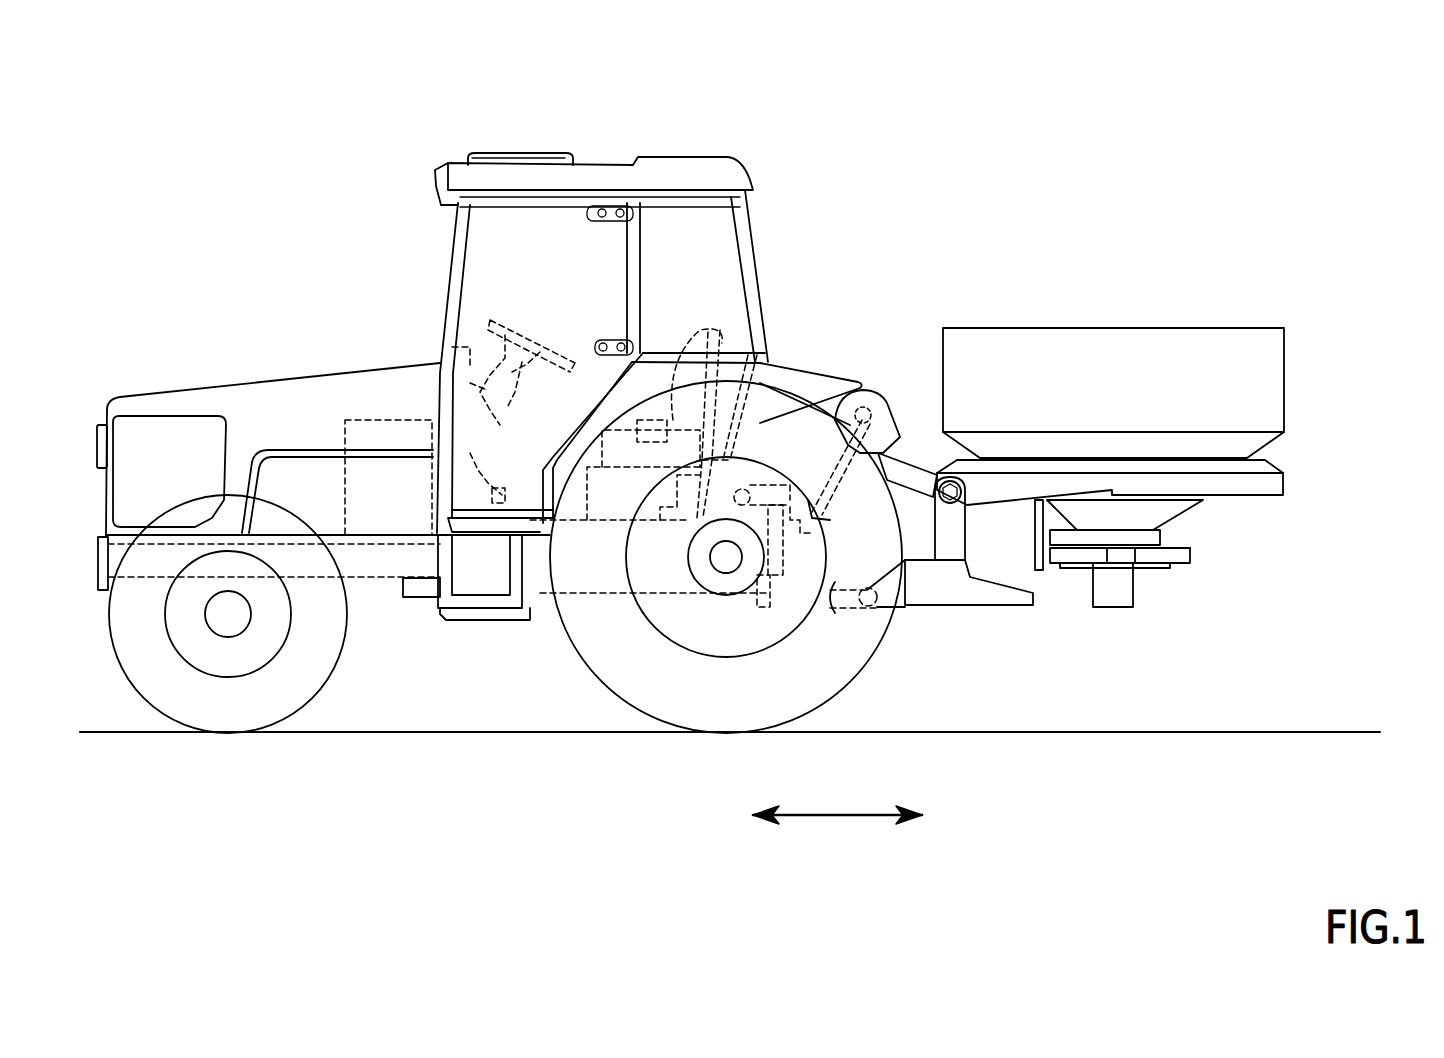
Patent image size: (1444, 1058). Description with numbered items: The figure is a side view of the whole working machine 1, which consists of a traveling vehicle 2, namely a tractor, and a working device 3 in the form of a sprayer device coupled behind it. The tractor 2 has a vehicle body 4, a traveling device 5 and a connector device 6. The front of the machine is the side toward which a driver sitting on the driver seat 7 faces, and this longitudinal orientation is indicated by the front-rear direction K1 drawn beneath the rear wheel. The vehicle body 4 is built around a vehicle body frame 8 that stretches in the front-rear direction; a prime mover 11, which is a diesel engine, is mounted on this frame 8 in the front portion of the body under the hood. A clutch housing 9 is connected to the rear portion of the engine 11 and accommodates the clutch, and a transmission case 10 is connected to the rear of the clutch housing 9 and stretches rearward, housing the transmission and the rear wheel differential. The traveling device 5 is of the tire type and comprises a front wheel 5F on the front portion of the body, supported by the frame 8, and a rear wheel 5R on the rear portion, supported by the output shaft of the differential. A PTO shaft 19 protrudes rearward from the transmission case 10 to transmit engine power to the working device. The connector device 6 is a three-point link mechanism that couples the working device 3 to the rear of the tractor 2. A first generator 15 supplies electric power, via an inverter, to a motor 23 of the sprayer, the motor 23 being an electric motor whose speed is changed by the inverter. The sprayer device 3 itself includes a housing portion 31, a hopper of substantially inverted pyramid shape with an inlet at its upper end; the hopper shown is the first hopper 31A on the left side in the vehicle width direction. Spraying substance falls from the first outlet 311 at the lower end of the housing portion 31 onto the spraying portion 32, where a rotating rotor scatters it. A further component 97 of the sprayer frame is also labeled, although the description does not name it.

The working machine 1 is at (934, 140).
The traveling vehicle 2 is at (365, 310).
The working device 3 is at (1277, 193).
The vehicle body 4 is at (240, 380).
The traveling device 5 is at (852, 670).
The front wheel 5F is at (313, 693).
The rear wheel 5R is at (612, 700).
The connector device 6 is at (890, 393).
The driver seat 7 is at (710, 330).
The vehicle body frame 8 is at (370, 580).
The clutch housing 9 is at (482, 594).
The transmission case 10 is at (583, 597).
The prime mover 11 is at (370, 420).
The first generator 15 is at (890, 485).
The PTO shaft 19 is at (770, 573).
The motor 23 is at (1131, 607).
The housing portion 31 is at (1252, 322).
The first hopper 31A is at (1142, 327).
The spraying portion 32 is at (1150, 575).
The support frame 97 is at (1270, 488).
The first outlet 311 is at (1097, 530).
The front-rear direction K1 is at (835, 818).